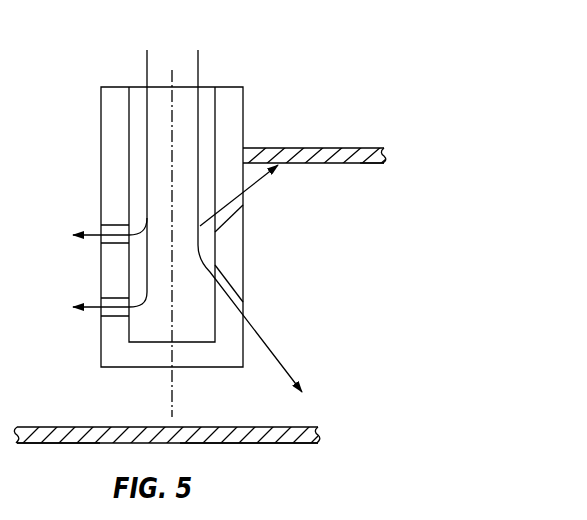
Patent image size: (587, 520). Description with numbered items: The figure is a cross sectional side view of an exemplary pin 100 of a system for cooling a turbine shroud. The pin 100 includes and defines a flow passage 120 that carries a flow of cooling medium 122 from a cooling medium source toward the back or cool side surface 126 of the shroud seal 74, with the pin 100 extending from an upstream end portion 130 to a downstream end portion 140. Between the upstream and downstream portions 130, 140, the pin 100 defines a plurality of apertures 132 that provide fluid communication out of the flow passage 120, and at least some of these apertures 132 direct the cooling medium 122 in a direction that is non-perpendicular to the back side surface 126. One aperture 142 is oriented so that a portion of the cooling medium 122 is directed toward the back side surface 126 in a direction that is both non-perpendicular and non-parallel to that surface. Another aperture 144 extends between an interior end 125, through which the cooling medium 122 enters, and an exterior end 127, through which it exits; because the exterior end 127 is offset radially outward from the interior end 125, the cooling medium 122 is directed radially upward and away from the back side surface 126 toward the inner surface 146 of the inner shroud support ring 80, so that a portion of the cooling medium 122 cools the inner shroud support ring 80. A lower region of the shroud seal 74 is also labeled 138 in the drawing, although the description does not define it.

The pin 100 is at (268, 95).
The upstream end portion 130 is at (99, 100).
The downstream end portion 140 is at (99, 359).
The flow passage 120 is at (188, 334).
The cooling medium 122 is at (146, 66).
The apertures 132 is at (111, 297).
The aperture 144 is at (250, 218).
The aperture 142 is at (239, 291).
The interior end 125 is at (218, 198).
The exterior end 127 is at (237, 180).
The inner shroud support ring 80 is at (316, 145).
The inner surface 146 is at (365, 166).
The back side surface 126 is at (110, 425).
The shroud seal 74 is at (68, 447).
The plate lower surface region 138 is at (210, 445).